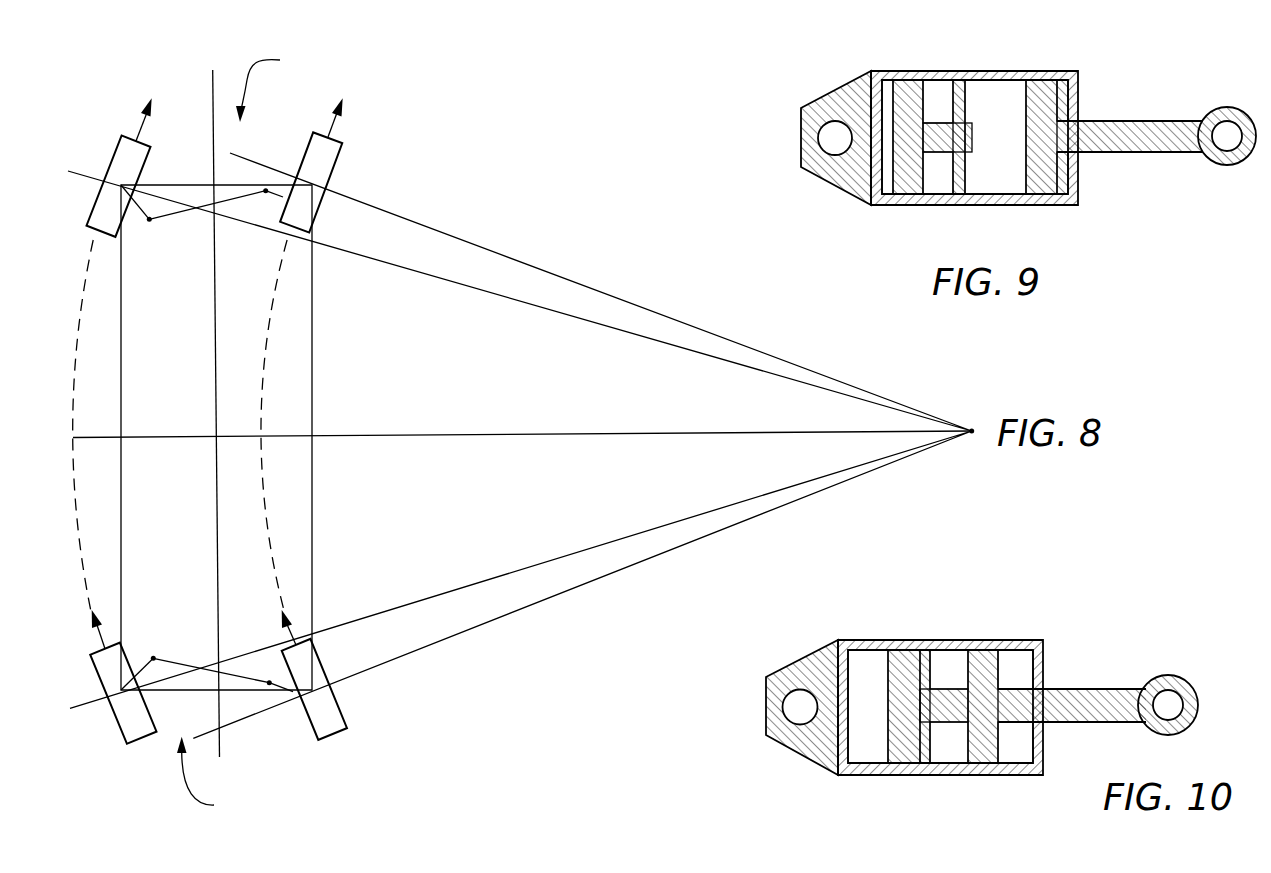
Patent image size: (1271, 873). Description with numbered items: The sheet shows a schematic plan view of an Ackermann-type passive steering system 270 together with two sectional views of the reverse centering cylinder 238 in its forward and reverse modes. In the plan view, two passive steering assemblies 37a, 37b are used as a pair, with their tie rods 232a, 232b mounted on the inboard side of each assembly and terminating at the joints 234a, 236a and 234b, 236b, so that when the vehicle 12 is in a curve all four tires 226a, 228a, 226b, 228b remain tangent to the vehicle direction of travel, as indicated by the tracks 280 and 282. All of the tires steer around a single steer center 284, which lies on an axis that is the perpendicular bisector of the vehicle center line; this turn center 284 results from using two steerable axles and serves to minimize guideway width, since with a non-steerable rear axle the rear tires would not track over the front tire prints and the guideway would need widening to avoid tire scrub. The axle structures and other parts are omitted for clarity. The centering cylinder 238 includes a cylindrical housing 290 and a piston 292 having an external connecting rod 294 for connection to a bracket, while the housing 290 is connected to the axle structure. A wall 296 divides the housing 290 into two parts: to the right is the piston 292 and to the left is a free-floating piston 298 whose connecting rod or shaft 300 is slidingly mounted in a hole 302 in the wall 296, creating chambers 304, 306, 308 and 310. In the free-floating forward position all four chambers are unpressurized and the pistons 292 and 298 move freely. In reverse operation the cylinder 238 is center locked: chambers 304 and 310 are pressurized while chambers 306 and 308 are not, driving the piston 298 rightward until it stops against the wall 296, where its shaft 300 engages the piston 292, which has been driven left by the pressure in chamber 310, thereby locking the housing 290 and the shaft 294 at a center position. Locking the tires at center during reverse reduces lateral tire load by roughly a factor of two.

In FIG. 8, the vehicle body 12 is at (313, 345).
In FIG. 8, the passive steering assembly 37a is at (276, 85).
In FIG. 8, the passive steering assembly 37b is at (214, 777).
In FIG. 8, the tire 226a is at (117, 158).
In FIG. 8, the tire 226b is at (328, 713).
In FIG. 8, the tire 228a is at (330, 158).
In FIG. 8, the tire 228b is at (123, 723).
In FIG. 8, the tie rod 232a is at (182, 213).
In FIG. 8, the tie rod 232b is at (180, 663).
In FIG. 8, the front left steering knuckle joint 234a is at (149, 221).
In FIG. 8, the rear right steering knuckle joint 234b is at (269, 684).
In FIG. 8, the front right steering knuckle joint 236a is at (266, 192).
In FIG. 8, the rear left steering knuckle joint 236b is at (153, 657).
In FIG. 9, the reverse centering cylinder 238 is at (772, 131).
In FIG. 10, the reverse centering cylinder 238 is at (1142, 607).
In FIG. 8, the passive steering system 270 is at (372, 400).
In FIG. 8, the track 280 is at (75, 383).
In FIG. 8, the track 282 is at (263, 483).
In FIG. 8, the steer center 284 is at (972, 430).
In FIG. 9, the cylindrical housing 290 is at (903, 69).
In FIG. 10, the cylindrical housing 290 is at (940, 707).
In FIG. 9, the piston 292 is at (1043, 98).
In FIG. 10, the piston 292 is at (992, 665).
In FIG. 9, the external connecting rod 294 is at (1150, 118).
In FIG. 10, the external connecting rod 294 is at (1082, 687).
In FIG. 9, the wall 296 is at (968, 92).
In FIG. 10, the wall 296 is at (930, 662).
In FIG. 9, the free-floating piston 298 is at (905, 173).
In FIG. 10, the free-floating piston 298 is at (902, 670).
In FIG. 9, the connecting rod 300 is at (943, 146).
In FIG. 10, the connecting rod 300 is at (948, 690).
In FIG. 9, the hole 302 is at (962, 118).
In FIG. 10, the hole 302 is at (935, 724).
In FIG. 9, the chamber 304 is at (885, 105).
In FIG. 10, the chamber 304 is at (858, 687).
In FIG. 9, the chamber 306 is at (933, 181).
In FIG. 9, the chamber 308 is at (1017, 184).
In FIG. 10, the chamber 308 is at (960, 744).
In FIG. 9, the chamber 310 is at (1063, 170).
In FIG. 10, the chamber 310 is at (1012, 749).